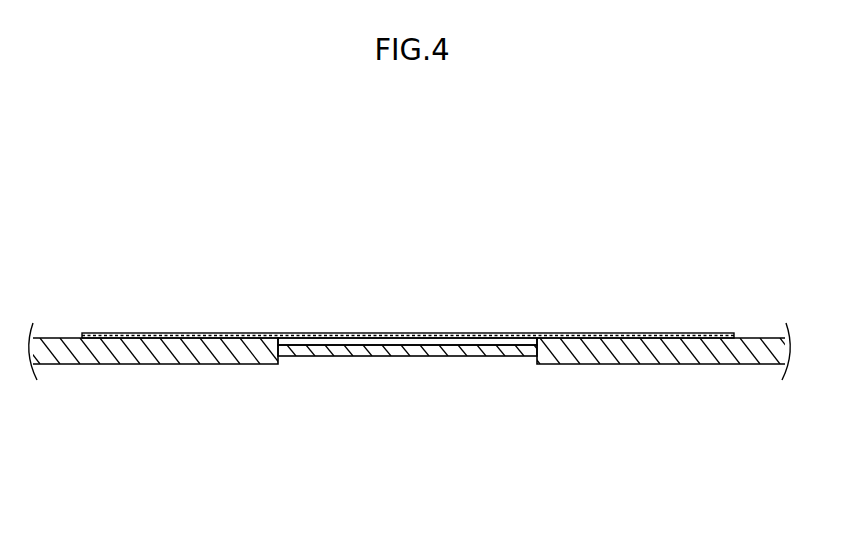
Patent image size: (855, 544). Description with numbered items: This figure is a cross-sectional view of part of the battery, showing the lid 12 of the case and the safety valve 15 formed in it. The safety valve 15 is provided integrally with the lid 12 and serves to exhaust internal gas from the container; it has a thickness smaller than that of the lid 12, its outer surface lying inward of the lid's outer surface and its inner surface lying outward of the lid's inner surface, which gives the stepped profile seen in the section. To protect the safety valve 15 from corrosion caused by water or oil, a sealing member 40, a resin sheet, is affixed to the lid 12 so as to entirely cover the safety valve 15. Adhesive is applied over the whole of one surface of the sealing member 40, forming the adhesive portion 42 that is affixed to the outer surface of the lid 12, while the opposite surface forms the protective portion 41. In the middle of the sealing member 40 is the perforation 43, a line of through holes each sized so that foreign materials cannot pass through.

The lid 12 is at (580, 365).
The safety valve 15 is at (365, 357).
The sealing member 40 is at (300, 334).
The protective portion 41 is at (482, 333).
The adhesive portion 42 is at (582, 333).
The perforation 43 is at (405, 333).